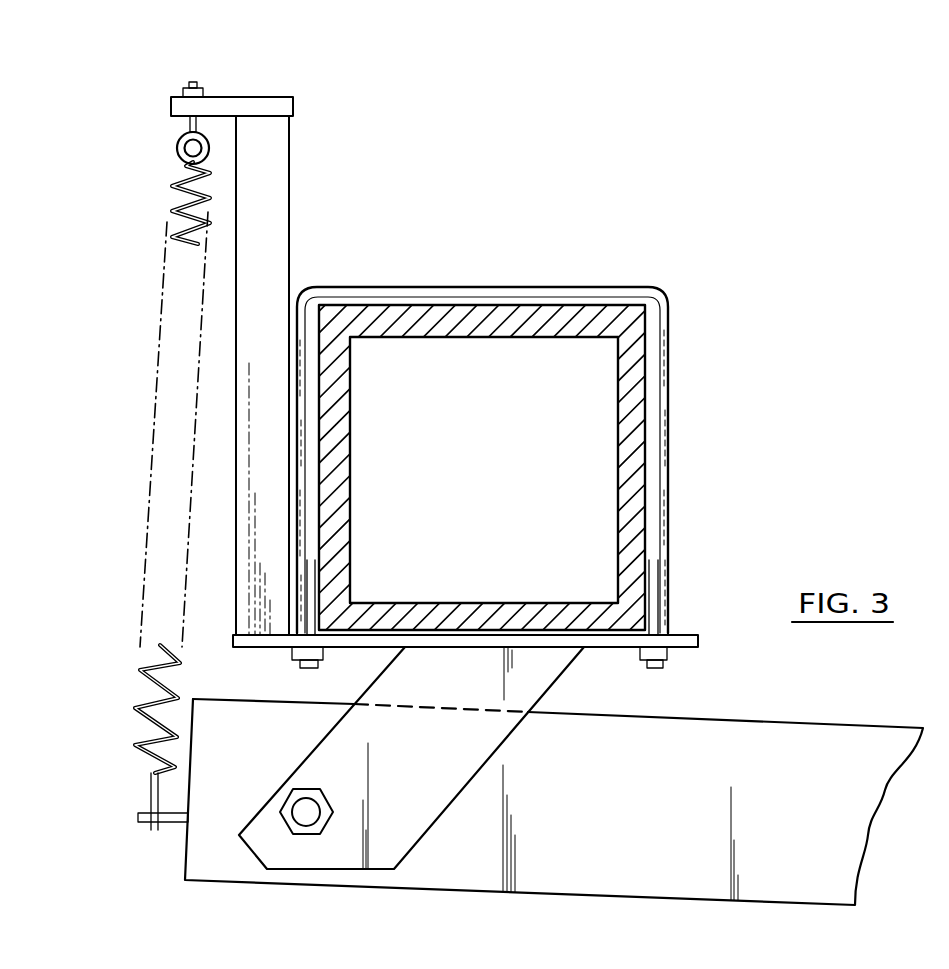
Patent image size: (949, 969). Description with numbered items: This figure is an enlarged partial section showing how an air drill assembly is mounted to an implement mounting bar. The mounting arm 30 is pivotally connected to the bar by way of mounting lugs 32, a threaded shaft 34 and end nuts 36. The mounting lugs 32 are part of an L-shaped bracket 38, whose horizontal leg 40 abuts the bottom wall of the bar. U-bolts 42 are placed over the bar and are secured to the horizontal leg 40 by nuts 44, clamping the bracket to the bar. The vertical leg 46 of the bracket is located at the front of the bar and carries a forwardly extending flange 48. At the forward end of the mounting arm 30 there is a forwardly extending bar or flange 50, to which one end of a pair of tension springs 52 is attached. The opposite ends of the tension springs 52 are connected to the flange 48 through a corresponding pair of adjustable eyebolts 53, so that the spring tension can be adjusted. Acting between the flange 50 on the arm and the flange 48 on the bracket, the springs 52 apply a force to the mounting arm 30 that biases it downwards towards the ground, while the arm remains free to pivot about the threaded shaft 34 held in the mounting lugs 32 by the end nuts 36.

The mounting arm 30 is at (735, 711).
The mounting lugs 32 is at (560, 678).
The threaded shaft 34 is at (312, 812).
The end nuts 36 is at (312, 796).
The L-shaped bracket 38 is at (286, 650).
The horizontal leg 40 is at (676, 638).
The U-bolts 42 is at (661, 383).
The nuts 44 is at (316, 656).
The vertical leg 46 is at (275, 183).
The flange 48 is at (232, 106).
The bar or flange 50 is at (178, 824).
The tension springs 52 is at (143, 700).
The adjustable eyebolts 53 is at (178, 152).